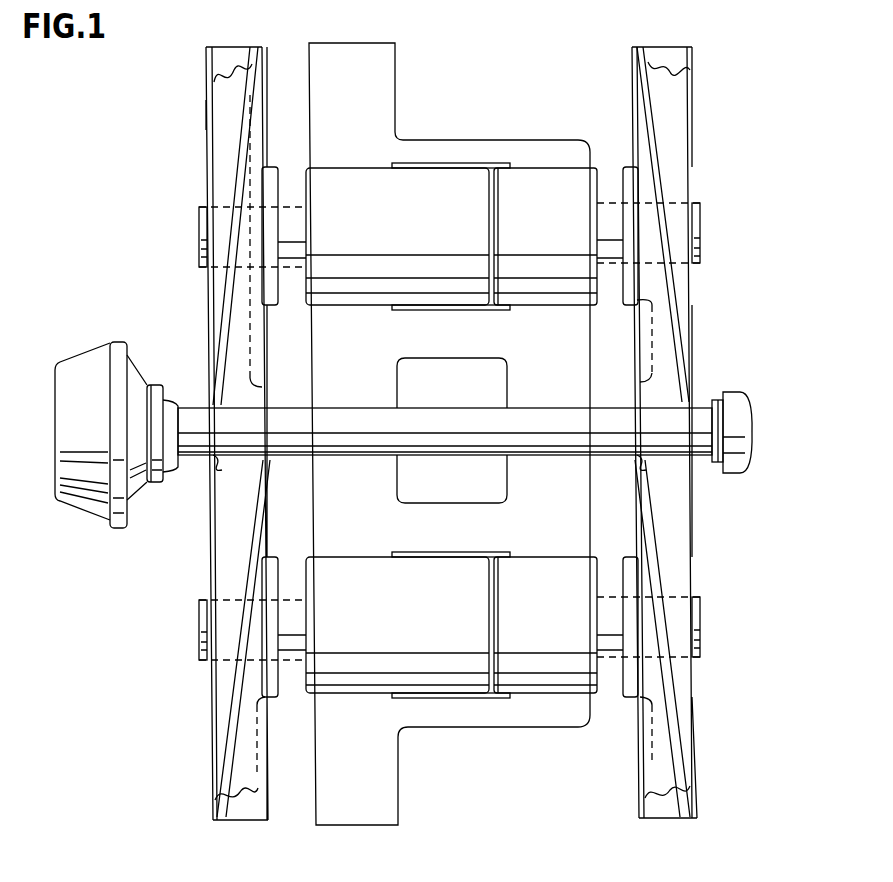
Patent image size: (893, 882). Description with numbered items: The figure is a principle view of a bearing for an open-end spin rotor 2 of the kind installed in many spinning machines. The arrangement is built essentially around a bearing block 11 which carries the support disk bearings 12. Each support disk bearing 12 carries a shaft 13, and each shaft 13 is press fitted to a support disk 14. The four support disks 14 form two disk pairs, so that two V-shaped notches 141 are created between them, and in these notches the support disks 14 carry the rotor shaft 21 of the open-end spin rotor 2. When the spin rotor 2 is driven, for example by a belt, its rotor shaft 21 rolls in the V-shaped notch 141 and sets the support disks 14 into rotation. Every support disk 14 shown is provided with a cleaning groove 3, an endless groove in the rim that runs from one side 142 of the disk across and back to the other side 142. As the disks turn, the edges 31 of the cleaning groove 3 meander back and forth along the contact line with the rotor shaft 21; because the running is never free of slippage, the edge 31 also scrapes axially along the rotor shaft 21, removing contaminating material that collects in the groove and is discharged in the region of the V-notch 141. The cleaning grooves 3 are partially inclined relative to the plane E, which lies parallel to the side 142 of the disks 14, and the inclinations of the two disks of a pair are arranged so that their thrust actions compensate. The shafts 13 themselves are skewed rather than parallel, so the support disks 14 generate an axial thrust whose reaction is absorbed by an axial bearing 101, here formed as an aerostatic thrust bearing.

The open-end spin rotor 2 is at (75, 342).
The cleaning groove 3 is at (230, 290).
The bearing block 11 is at (532, 155).
The support disk bearing 12 is at (465, 665).
The shaft 13 is at (292, 215).
The support disk 14 is at (222, 130).
The rotor shaft 21 is at (553, 440).
The edge of cleaning groove 31 is at (230, 677).
The axial bearing 101 is at (742, 440).
The V-shaped notch 141 is at (197, 472).
The side of support disk 142 is at (207, 185).
The plane E is at (207, 112).